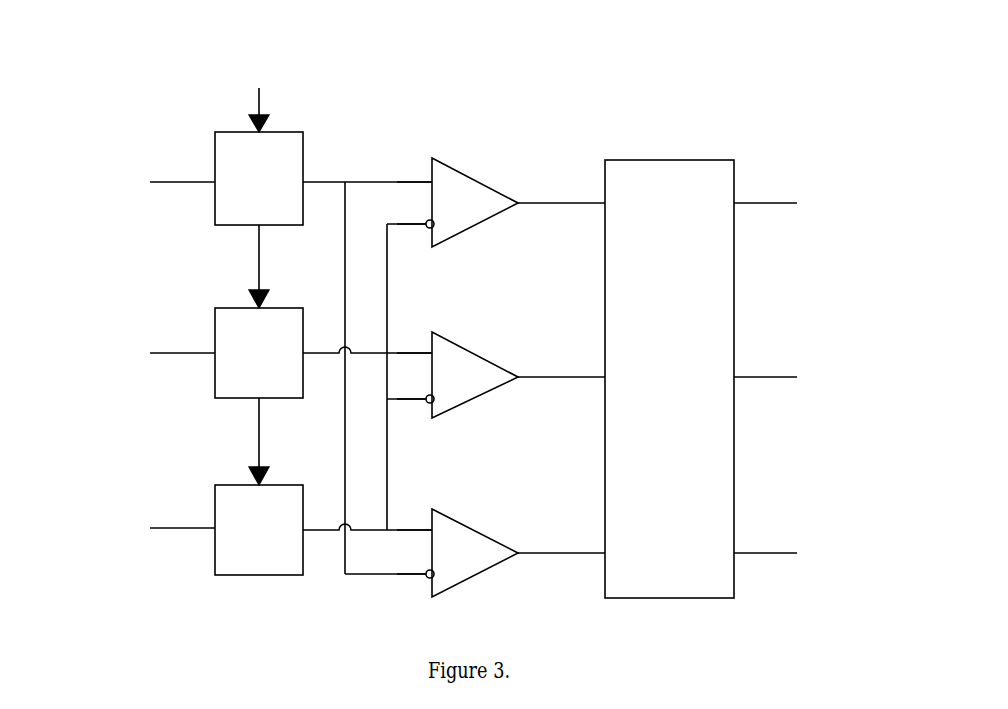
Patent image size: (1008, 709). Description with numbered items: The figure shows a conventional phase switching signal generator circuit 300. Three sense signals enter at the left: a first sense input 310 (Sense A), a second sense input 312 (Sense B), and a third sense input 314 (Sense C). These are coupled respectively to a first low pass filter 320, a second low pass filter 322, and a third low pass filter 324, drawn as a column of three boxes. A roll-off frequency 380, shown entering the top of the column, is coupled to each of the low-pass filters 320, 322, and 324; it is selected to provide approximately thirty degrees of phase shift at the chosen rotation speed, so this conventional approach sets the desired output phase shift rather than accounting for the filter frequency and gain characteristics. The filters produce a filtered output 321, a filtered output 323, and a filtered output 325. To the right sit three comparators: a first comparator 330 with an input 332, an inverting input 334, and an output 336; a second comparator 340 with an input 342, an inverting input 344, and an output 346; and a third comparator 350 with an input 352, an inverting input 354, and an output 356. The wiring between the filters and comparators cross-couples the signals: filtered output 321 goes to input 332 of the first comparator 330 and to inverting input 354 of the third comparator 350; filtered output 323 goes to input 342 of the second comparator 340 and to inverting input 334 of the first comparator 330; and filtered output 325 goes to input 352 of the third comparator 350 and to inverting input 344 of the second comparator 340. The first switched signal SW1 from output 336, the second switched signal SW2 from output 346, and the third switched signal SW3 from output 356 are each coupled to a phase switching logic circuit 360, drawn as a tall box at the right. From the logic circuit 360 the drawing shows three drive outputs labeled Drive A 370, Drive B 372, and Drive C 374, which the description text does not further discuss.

The phase switching signal generator circuit 300 is at (98, 37).
The first sense input 310 is at (133, 161).
The second sense input 312 is at (133, 342).
The third sense input 314 is at (133, 517).
The first low pass filter 320 is at (259, 220).
The second low pass filter 322 is at (259, 396).
The third low pass filter 324 is at (259, 530).
The filtered output 321 is at (367, 366).
The filtered output 323 is at (367, 343).
The filtered output 325 is at (367, 377).
The first comparator 330 is at (475, 202).
The input 332 is at (414, 171).
The inverting input 334 is at (415, 234).
The output 336 is at (556, 200).
The second comparator 340 is at (475, 375).
The input 342 is at (414, 343).
The inverting input 344 is at (415, 409).
The output 346 is at (557, 375).
The third comparator 350 is at (475, 553).
The input 352 is at (414, 521).
The inverting input 354 is at (415, 584).
The output 356 is at (556, 552).
The phase switching logic circuit 360 is at (669, 379).
The drive A output 370 is at (809, 194).
The drive B output 372 is at (809, 368).
The drive C output 374 is at (809, 545).
The roll-off frequency 380 is at (261, 71).